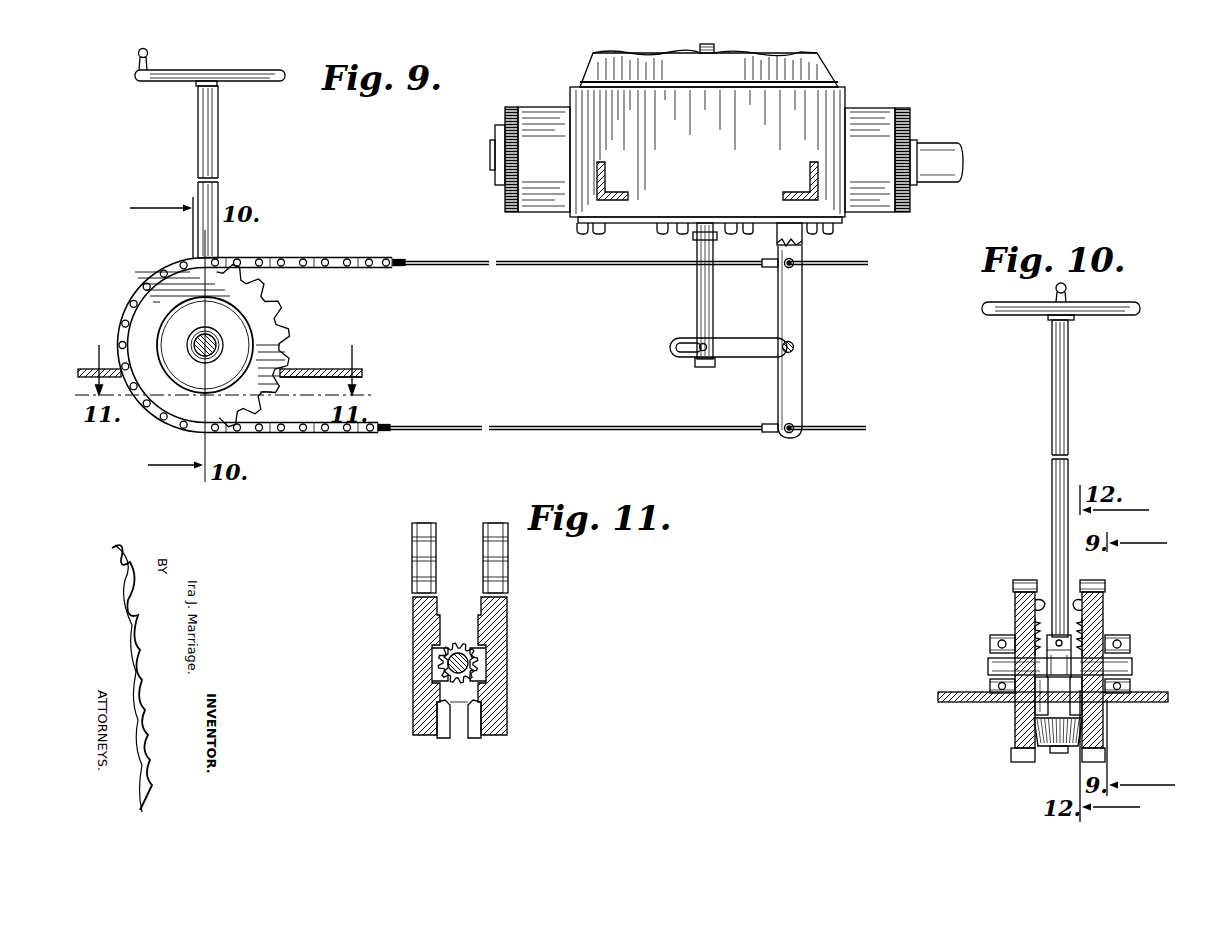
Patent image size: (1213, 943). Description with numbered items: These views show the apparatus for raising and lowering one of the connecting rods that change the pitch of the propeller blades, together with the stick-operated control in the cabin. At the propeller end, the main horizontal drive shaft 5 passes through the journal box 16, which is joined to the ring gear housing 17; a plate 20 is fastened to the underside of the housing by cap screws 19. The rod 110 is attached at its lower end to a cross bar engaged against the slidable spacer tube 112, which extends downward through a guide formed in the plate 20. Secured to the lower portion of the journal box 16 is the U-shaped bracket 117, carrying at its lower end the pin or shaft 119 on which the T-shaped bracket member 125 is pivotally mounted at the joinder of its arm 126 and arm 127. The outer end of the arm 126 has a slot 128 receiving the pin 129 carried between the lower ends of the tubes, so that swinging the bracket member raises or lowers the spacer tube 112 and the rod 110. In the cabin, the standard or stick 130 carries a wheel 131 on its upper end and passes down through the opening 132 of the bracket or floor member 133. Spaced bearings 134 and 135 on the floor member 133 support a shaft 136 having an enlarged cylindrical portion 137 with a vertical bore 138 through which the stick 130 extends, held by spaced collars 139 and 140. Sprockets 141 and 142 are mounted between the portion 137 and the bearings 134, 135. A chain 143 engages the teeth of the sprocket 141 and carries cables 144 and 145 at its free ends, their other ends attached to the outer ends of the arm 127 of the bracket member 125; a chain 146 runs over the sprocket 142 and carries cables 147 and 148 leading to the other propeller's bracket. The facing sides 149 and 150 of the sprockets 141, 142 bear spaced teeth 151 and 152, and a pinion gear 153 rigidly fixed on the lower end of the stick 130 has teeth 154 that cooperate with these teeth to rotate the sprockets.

In FIG. 9, the main horizontal drive shaft 5 is at (962, 152).
In FIG. 9, the journal box 16 is at (842, 215).
In FIG. 9, the ring gear housing 17 is at (826, 57).
In FIG. 9, the cap screws 19 is at (590, 230).
In FIG. 9, the plate 20 is at (618, 226).
In FIG. 9, the rod 110 is at (694, 54).
In FIG. 9, the slidable spacer tube 112 is at (700, 306).
In FIG. 9, the U-shaped bracket 117 is at (803, 248).
In FIG. 9, the pin or shaft 119 is at (800, 352).
In FIG. 9, the T-shaped bracket member 125 is at (785, 382).
In FIG. 9, the arm 126 is at (726, 343).
In FIG. 9, the arm 127 is at (793, 301).
In FIG. 9, the slot 128 is at (688, 355).
In FIG. 9, the pin 129 is at (705, 360).
In FIG. 9, the standard or stick 130 is at (219, 150).
In FIG. 10, the standard or stick 130 is at (1068, 397).
In FIG. 11, the standard or stick 130 is at (466, 658).
In FIG. 9, the wheel 131 is at (286, 82).
In FIG. 10, the wheel 131 is at (1132, 316).
In FIG. 9, the opening 132 is at (305, 369).
In FIG. 9, the bracket or floor member 133 is at (363, 373).
In FIG. 10, the bracket or floor member 133 is at (945, 703).
In FIG. 10, the bearing 134 is at (1130, 646).
In FIG. 10, the bearing 135 is at (991, 638).
In FIG. 9, the shaft 136 is at (227, 338).
In FIG. 10, the shaft 136 is at (990, 666).
In FIG. 10, the enlarged cylindrical portion 137 is at (1071, 658).
In FIG. 10, the vertical bore 138 is at (1073, 705).
In FIG. 10, the collar 139 is at (1071, 642).
In FIG. 10, the collar 140 is at (1040, 700).
In FIG. 9, the sprocket 141 is at (247, 293).
In FIG. 10, the sprocket 141 is at (1103, 600).
In FIG. 11, the sprocket 141 is at (500, 690).
In FIG. 10, the sprocket 142 is at (1018, 600).
In FIG. 11, the sprocket 142 is at (420, 625).
In FIG. 9, the chain 143 is at (373, 259).
In FIG. 10, the chain 143 is at (1092, 582).
In FIG. 11, the chain 143 is at (507, 570).
In FIG. 9, the cable 144 is at (458, 262).
In FIG. 9, the cable 145 is at (438, 427).
In FIG. 10, the chain 146 is at (1022, 582).
In FIG. 11, the chain 146 is at (414, 560).
In FIG. 9, the cable 147 is at (868, 266).
In FIG. 9, the cable 148 is at (858, 428).
In FIG. 10, the facing side 149 is at (1078, 610).
In FIG. 11, the facing side 149 is at (477, 720).
In FIG. 10, the facing side 150 is at (1038, 612).
In FIG. 11, the facing side 150 is at (440, 710).
In FIG. 10, the spaced teeth 151 is at (1082, 612).
In FIG. 11, the spaced teeth 151 is at (490, 688).
In FIG. 10, the spaced teeth 152 is at (1036, 603).
In FIG. 11, the spaced teeth 152 is at (440, 676).
In FIG. 10, the pinion gear 153 is at (1050, 752).
In FIG. 11, the pinion gear 153 is at (450, 648).
In FIG. 10, the teeth 154 is at (1076, 733).
In FIG. 11, the teeth 154 is at (470, 695).